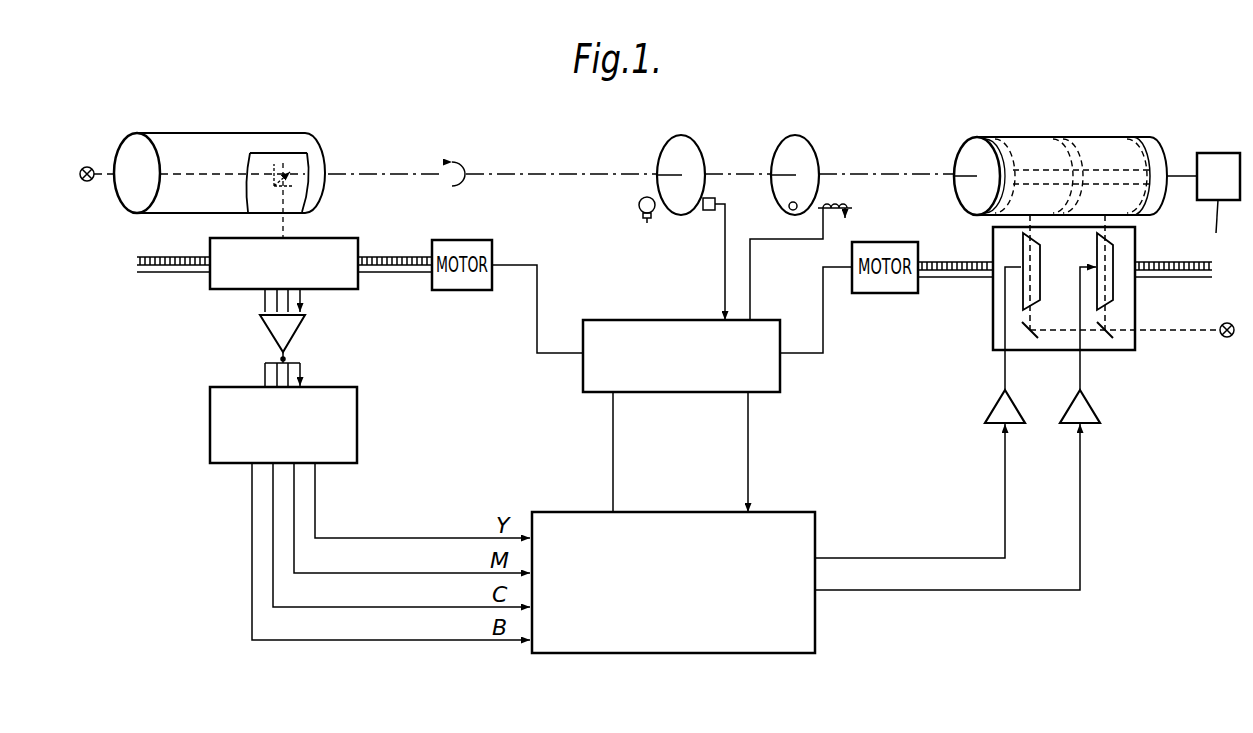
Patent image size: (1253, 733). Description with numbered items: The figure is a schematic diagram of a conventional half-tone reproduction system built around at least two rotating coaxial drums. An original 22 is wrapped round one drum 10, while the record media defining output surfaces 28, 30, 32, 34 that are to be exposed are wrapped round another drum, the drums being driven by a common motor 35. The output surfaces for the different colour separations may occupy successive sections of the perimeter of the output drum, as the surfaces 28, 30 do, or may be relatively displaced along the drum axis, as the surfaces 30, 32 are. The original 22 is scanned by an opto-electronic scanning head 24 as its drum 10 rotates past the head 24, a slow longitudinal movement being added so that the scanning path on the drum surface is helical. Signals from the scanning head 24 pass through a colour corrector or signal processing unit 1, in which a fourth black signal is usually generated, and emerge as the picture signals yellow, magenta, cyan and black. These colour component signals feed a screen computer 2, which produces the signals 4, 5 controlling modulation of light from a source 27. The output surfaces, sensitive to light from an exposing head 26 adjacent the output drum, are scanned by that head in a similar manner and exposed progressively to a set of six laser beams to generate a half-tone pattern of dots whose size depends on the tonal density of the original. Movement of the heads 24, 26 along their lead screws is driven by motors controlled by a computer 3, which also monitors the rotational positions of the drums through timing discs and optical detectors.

The colour corrector (signal processing unit) 1 is at (292, 458).
The screen computer 2 is at (682, 601).
The computer 3 is at (690, 373).
The signal controlling light modulation 4 is at (863, 557).
The signal controlling light modulation 5 is at (873, 590).
The drum 10 is at (308, 143).
The original 22 is at (302, 167).
The opto-electronic scanning head 24 is at (358, 238).
The exposing head 26 is at (1137, 308).
The light source 27 is at (1225, 323).
The output surface 28 is at (1012, 214).
The output surface 30 is at (1022, 142).
The output surface 32 is at (1105, 142).
The output surface 34 is at (1142, 203).
The common motor 35 is at (1208, 153).